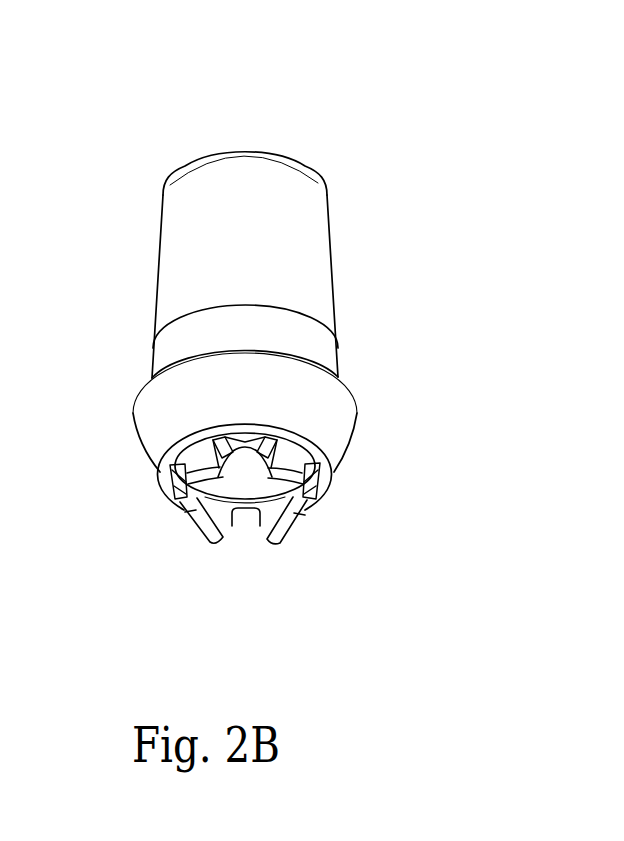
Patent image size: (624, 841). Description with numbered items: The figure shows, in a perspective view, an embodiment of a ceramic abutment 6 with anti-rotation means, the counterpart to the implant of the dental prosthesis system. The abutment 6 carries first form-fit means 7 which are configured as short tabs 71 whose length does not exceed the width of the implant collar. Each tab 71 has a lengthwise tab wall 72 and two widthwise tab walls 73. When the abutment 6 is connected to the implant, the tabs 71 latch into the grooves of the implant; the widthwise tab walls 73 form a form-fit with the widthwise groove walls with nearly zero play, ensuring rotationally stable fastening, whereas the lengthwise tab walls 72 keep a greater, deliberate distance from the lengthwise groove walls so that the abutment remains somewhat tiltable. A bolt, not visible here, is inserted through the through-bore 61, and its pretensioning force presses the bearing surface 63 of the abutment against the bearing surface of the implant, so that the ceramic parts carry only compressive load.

The abutment 6 is at (267, 150).
The bearing surface 63 is at (306, 468).
The through-bore 61 is at (245, 485).
The widthwise tab wall 73 is at (190, 458).
The first form-fit means 7 is at (169, 502).
The tab 71 is at (169, 502).
The lengthwise tab wall 72 is at (192, 472).